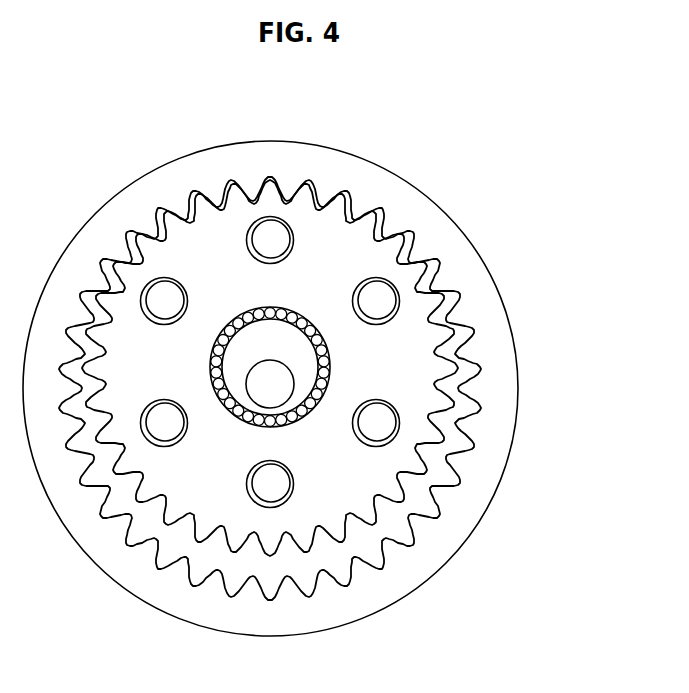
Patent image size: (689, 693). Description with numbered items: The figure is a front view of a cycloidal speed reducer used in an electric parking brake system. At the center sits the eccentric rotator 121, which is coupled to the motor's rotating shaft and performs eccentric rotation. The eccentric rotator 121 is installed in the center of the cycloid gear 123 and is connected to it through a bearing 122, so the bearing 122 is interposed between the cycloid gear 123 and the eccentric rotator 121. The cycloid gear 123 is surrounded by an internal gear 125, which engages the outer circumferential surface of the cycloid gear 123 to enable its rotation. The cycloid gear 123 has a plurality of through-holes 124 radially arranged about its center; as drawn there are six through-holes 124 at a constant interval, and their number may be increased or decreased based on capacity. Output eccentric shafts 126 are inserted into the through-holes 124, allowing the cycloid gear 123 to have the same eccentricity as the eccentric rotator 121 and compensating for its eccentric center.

The eccentric rotator 121 is at (302, 348).
The bearing 122 is at (270, 313).
The cycloid gear 123 is at (425, 325).
The through-holes 124 is at (278, 482).
The internal gear 125 is at (388, 182).
The output eccentric shafts 126 is at (399, 422).